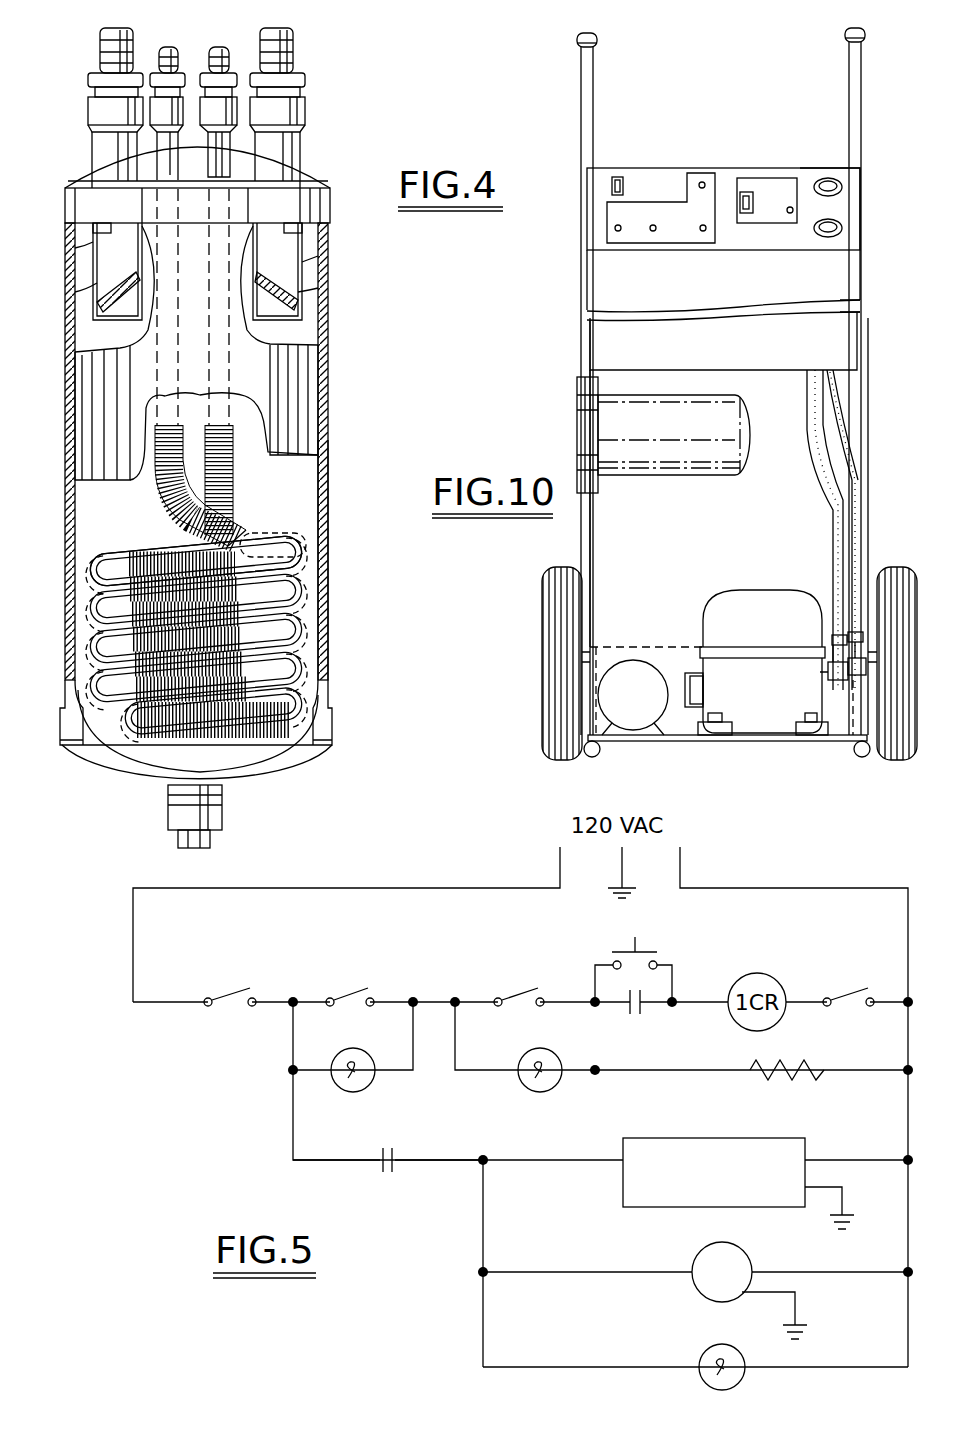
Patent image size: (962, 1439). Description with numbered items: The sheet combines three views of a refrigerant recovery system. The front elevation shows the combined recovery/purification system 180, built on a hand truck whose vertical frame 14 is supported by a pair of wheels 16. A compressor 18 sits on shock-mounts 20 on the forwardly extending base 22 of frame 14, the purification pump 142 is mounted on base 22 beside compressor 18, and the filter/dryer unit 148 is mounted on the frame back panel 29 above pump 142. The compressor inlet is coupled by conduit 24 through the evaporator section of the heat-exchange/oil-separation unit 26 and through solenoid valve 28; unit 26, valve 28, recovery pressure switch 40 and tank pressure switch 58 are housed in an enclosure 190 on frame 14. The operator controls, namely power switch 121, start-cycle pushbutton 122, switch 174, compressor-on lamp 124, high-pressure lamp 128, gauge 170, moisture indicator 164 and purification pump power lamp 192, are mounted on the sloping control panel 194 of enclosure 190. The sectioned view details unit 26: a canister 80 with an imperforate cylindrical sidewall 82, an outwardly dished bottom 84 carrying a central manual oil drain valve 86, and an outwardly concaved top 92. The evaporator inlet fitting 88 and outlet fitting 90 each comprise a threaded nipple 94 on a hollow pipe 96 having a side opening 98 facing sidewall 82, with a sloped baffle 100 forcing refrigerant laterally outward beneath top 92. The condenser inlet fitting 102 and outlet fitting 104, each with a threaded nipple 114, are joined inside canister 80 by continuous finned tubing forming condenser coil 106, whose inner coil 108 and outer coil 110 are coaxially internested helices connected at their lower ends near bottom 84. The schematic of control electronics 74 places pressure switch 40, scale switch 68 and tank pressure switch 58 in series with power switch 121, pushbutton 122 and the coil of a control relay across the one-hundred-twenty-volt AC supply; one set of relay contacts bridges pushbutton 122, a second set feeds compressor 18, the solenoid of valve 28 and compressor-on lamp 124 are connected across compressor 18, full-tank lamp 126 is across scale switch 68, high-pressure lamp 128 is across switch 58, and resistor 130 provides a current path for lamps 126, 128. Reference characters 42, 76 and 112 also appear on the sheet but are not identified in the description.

In FIG. 10, the vertical frame 14 is at (868, 448).
In FIG. 10, the wheels 16 is at (542, 676).
In FIG. 10, the compressor 18 is at (772, 592).
In FIG. 5, the compressor 18 is at (730, 1138).
In FIG. 10, the shock-mounts 20 is at (800, 718).
In FIG. 10, the base 22 is at (808, 742).
In FIG. 10, the conduit 24 is at (832, 512).
In FIG. 4, the heat-exchange/oil-separation unit 26 is at (338, 520).
In FIG. 5, the solenoid valve 28 is at (696, 1255).
In FIG. 10, the panel 29 is at (592, 536).
In FIG. 5, the pressure switch 40 is at (845, 982).
In FIG. 10, the hose 42 is at (860, 505).
In FIG. 5, the tank pressure switch 58 is at (515, 982).
In FIG. 5, the scale switch 68 is at (350, 982).
In FIG. 5, the control electronics 74 is at (258, 1168).
In FIG. 10, the handles 76 is at (594, 90).
In FIG. 4, the canister 80 is at (330, 362).
In FIG. 4, the sidewall 82 is at (328, 464).
In FIG. 4, the bottom 84 is at (128, 770).
In FIG. 4, the manual oil drain valve 86 is at (222, 812).
In FIG. 4, the inlet fitting 88 is at (86, 106).
In FIG. 4, the outlet fitting 90 is at (308, 110).
In FIG. 4, the top 92 is at (316, 188).
In FIG. 4, the threaded nipple 94 is at (100, 45).
In FIG. 4, the hollow pipe 96 is at (92, 145).
In FIG. 4, the opening 98 is at (100, 250).
In FIG. 4, the baffle 100 is at (100, 292).
In FIG. 4, the inlet fitting 102 is at (212, 48).
In FIG. 4, the outlet fitting 104 is at (167, 46).
In FIG. 4, the condenser coil 106 is at (314, 556).
In FIG. 4, the inner coil 108 is at (246, 536).
In FIG. 4, the outer coil 110 is at (98, 556).
In FIG. 4, the coil inlet tubes 112 is at (166, 490).
In FIG. 4, the threaded nipple 114 is at (224, 52).
In FIG. 10, the operator power switch 121 is at (622, 177).
In FIG. 5, the operator power switch 121 is at (232, 982).
In FIG. 10, the start-cycle pushbutton 122 is at (615, 229).
In FIG. 5, the start-cycle pushbutton 122 is at (658, 950).
In FIG. 10, the compressor-on lamp 124 is at (655, 231).
In FIG. 5, the compressor-on lamp 124 is at (708, 1352).
In FIG. 10, the full-tank lamp 126 is at (703, 182).
In FIG. 5, the full-tank lamp 126 is at (355, 1092).
In FIG. 10, the high-pressure lamp 128 is at (703, 231).
In FIG. 5, the high-pressure lamp 128 is at (548, 1092).
In FIG. 5, the resistor 130 is at (785, 1065).
In FIG. 10, the pump 142 is at (635, 663).
In FIG. 10, the filter/dryer unit 148 is at (672, 478).
In FIG. 10, the moisture indicator 164 is at (843, 227).
In FIG. 10, the gauge 170 is at (840, 180).
In FIG. 10, the switch 174 is at (752, 192).
In FIG. 10, the combined recovery/purification system 180 is at (570, 320).
In FIG. 10, the enclosure 190 is at (880, 300).
In FIG. 10, the purification pump power lamp 192 is at (788, 213).
In FIG. 10, the sloping control panel 194 is at (848, 202).